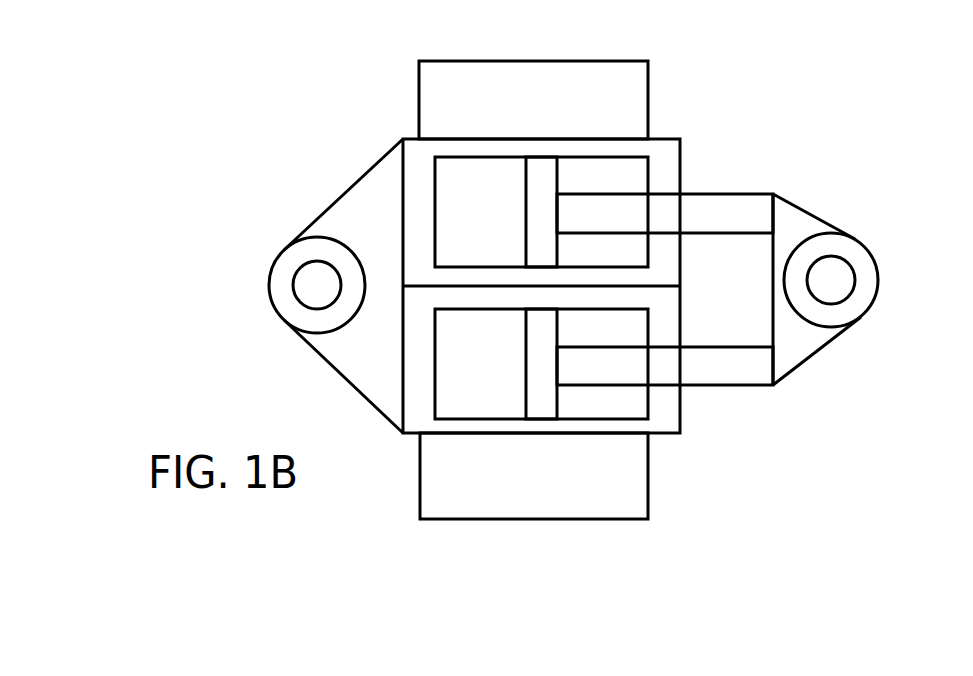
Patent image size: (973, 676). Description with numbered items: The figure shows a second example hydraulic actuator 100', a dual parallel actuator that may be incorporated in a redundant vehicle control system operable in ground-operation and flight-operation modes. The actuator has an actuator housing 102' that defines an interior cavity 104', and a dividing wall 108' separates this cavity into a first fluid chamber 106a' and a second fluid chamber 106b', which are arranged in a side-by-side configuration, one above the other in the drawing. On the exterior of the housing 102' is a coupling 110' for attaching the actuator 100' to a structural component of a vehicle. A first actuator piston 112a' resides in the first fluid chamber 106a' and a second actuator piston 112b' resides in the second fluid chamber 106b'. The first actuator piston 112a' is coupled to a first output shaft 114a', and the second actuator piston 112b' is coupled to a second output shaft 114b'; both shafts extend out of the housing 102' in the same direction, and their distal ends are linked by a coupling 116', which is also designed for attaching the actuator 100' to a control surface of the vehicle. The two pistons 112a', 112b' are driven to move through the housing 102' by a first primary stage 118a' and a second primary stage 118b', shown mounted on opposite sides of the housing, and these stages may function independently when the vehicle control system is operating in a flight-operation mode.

The hydraulic actuator 100' is at (589, 301).
The actuator housing 102' is at (585, 251).
The interior cavity 104' is at (494, 171).
The first fluid chamber 106a' is at (482, 214).
The second fluid chamber 106b' is at (482, 365).
The dividing wall 108' is at (572, 303).
The coupling 110' is at (315, 286).
The first actuator piston 112a' is at (643, 209).
The second actuator piston 112b' is at (644, 413).
The first output shaft 114a' is at (730, 202).
The second output shaft 114b' is at (707, 385).
The coupling 116' is at (854, 289).
The first primary stage 118a' is at (560, 92).
The second primary stage 118b' is at (563, 495).